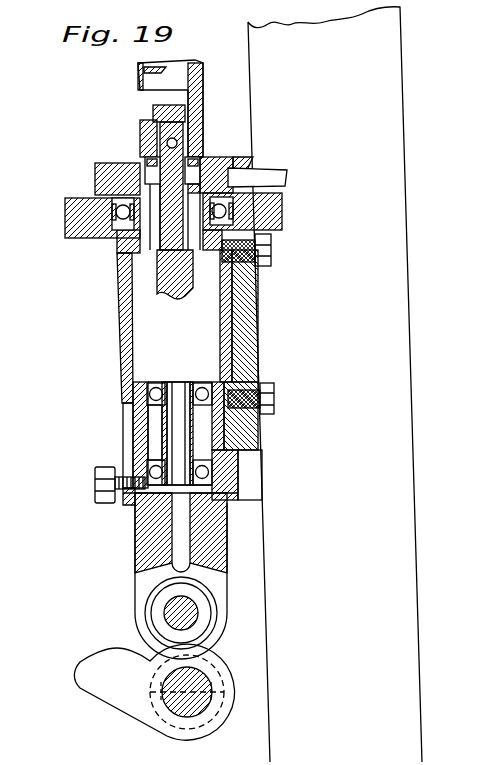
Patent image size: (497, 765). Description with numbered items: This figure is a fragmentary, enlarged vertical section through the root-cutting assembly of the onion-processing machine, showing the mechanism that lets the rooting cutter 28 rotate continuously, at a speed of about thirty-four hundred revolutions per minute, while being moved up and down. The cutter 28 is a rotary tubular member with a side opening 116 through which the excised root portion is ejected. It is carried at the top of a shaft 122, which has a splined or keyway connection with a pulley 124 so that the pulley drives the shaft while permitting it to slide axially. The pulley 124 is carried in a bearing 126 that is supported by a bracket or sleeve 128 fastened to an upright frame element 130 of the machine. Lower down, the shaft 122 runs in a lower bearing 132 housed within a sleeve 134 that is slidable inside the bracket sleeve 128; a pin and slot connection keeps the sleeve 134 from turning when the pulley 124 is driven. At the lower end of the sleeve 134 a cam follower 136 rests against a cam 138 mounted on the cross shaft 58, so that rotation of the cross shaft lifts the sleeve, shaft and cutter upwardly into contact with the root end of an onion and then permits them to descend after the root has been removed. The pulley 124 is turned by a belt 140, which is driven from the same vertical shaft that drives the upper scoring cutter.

The rooting cutter 28 is at (200, 85).
The side opening 116 is at (152, 114).
The shaft 122 is at (160, 133).
The pulley 124 is at (240, 156).
The belt 140 is at (278, 176).
The bearing 126 is at (233, 212).
The bracket or sleeve 128 is at (123, 283).
The upright frame element 130 is at (383, 302).
The lower bearing 132 is at (207, 378).
The sleeve 134 is at (137, 428).
The cam follower 136 is at (158, 612).
The cam 138 is at (103, 665).
The cross shaft 58 is at (195, 713).